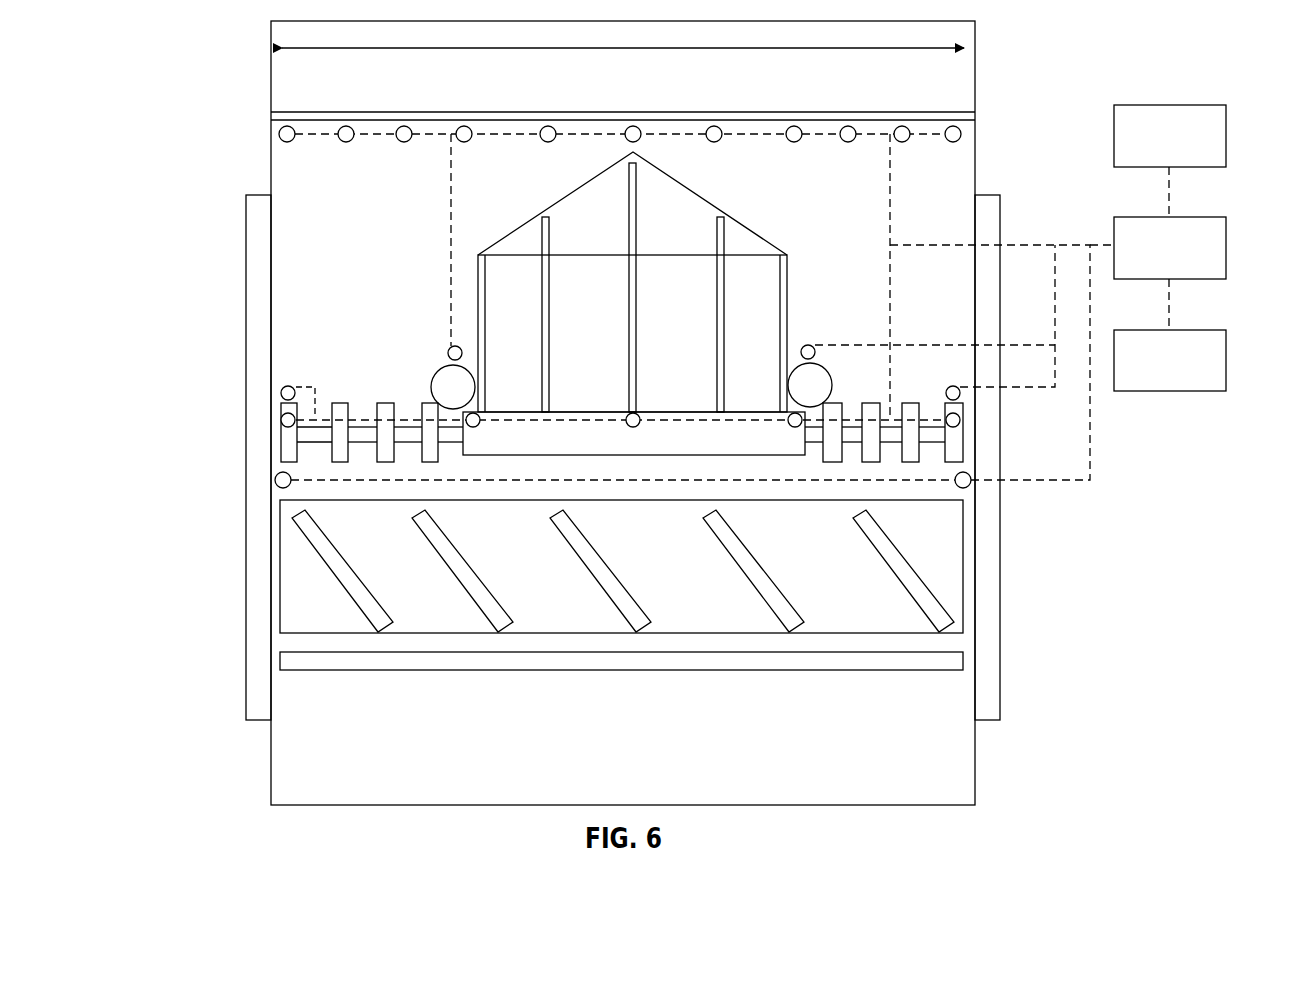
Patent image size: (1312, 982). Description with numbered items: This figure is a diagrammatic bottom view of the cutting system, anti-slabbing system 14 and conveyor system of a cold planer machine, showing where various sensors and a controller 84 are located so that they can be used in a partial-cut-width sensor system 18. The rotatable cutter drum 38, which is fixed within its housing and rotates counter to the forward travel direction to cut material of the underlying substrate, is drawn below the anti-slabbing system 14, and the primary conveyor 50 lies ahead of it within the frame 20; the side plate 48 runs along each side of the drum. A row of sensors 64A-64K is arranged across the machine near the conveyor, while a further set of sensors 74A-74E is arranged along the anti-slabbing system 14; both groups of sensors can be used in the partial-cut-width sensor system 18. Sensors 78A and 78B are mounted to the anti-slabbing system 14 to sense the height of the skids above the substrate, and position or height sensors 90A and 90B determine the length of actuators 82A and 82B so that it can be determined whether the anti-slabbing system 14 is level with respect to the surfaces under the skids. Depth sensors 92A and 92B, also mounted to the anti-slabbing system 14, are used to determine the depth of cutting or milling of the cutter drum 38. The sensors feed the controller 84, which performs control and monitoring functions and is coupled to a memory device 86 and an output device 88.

The anti-slabbing system 14 is at (545, 202).
The partial-cut-width sensor system 18 is at (1222, 78).
The frame 20 is at (280, 735).
The rotatable cutter drum 38 is at (293, 610).
The side plate 48 is at (253, 693).
The primary conveyor 50 is at (313, 296).
The sensors 64A-64K is at (270, 134).
The sensors 74A-74E is at (270, 420).
The sensor 78A is at (960, 395).
The sensor 78B is at (281, 393).
The actuator 82A is at (800, 395).
The actuator 82B is at (445, 390).
The controller 84 is at (1210, 248).
The memory device 86 is at (1172, 368).
The output device 88 is at (1168, 121).
The position or height sensor 90A is at (807, 345).
The position or height sensor 90B is at (448, 353).
The depth sensor 92A is at (970, 482).
The depth sensor 92B is at (275, 480).